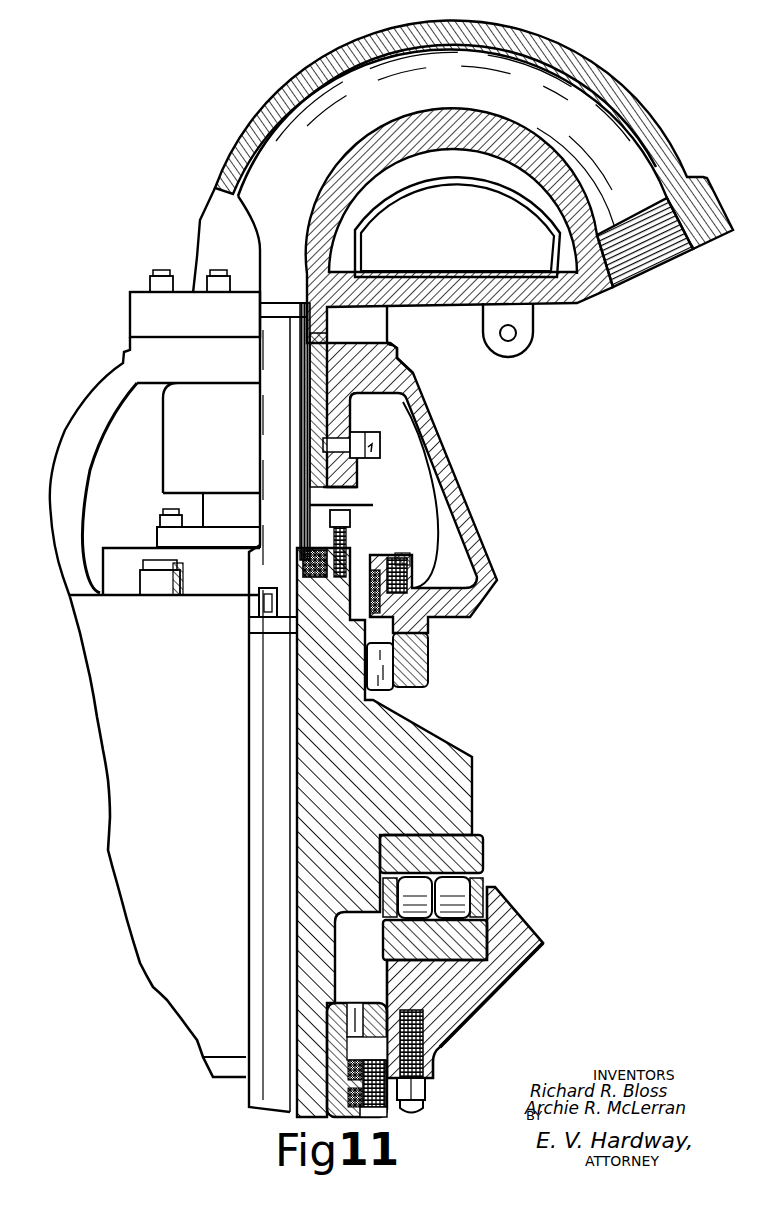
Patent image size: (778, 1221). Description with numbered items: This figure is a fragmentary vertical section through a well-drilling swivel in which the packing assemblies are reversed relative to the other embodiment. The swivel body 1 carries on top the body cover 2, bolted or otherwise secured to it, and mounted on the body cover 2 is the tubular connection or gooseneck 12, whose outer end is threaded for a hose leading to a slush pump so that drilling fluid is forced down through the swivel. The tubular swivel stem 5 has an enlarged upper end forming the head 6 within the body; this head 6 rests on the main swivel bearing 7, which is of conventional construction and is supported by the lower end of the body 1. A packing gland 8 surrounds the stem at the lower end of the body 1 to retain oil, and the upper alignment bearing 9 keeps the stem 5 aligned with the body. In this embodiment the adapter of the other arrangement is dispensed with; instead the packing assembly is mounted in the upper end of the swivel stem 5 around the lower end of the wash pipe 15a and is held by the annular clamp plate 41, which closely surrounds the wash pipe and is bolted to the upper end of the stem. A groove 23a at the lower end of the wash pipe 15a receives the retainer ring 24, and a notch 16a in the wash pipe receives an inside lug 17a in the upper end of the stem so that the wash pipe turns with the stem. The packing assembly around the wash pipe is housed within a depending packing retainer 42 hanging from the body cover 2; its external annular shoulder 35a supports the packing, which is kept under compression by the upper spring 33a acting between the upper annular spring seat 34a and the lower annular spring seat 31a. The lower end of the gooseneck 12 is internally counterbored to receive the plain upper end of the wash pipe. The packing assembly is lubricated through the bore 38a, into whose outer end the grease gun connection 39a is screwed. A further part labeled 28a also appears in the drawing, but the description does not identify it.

The swivel body 1 is at (540, 978).
The body cover 2 is at (450, 464).
The tubular swivel stem 5 is at (300, 1077).
The head 6 is at (470, 761).
The main swivel bearing 7 is at (484, 889).
The packing gland 8 is at (432, 1070).
The upper alignment bearing 9 is at (395, 664).
The gooseneck 12 is at (250, 118).
The wash pipe 15a is at (312, 510).
The notch 16a is at (258, 598).
The inside lug 17a is at (252, 620).
The groove 23a is at (301, 562).
The retainer ring 24 is at (345, 558).
The recess 28a is at (352, 408).
The lower annular spring seat 31a is at (414, 375).
The upper spring 33a is at (398, 352).
The upper annular spring seat 34a is at (389, 322).
The external annular shoulder 35a is at (340, 486).
The bore 38a is at (352, 437).
The grease gun connection 39a is at (385, 461).
The annular clamp plate 41 is at (158, 533).
The depending packing retainer 42 is at (178, 425).